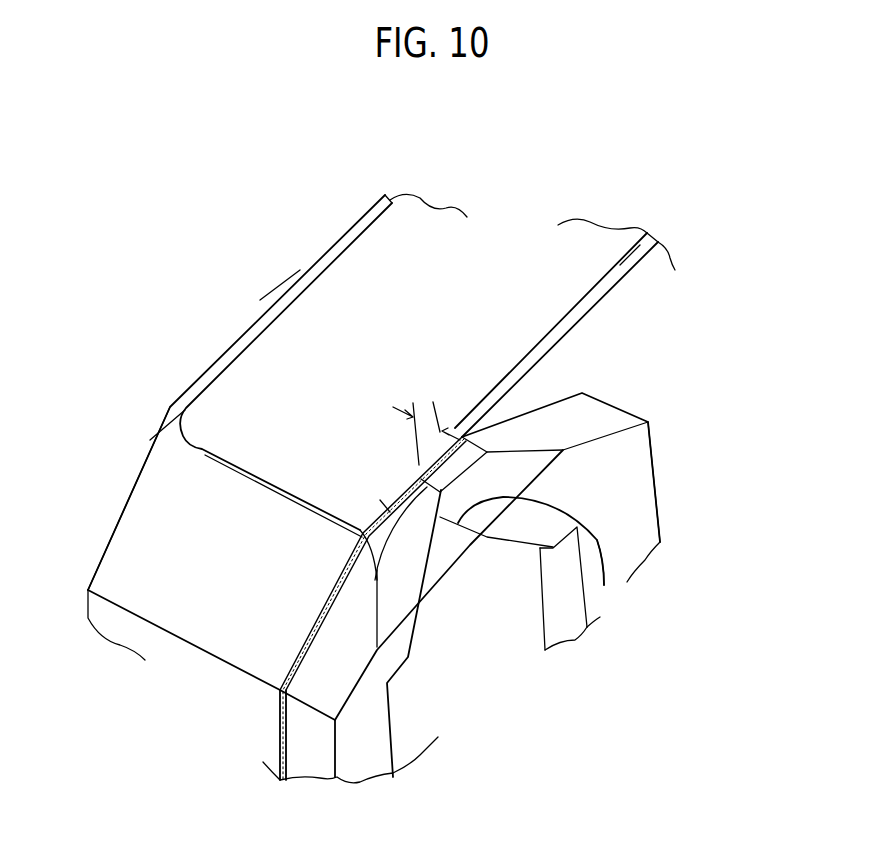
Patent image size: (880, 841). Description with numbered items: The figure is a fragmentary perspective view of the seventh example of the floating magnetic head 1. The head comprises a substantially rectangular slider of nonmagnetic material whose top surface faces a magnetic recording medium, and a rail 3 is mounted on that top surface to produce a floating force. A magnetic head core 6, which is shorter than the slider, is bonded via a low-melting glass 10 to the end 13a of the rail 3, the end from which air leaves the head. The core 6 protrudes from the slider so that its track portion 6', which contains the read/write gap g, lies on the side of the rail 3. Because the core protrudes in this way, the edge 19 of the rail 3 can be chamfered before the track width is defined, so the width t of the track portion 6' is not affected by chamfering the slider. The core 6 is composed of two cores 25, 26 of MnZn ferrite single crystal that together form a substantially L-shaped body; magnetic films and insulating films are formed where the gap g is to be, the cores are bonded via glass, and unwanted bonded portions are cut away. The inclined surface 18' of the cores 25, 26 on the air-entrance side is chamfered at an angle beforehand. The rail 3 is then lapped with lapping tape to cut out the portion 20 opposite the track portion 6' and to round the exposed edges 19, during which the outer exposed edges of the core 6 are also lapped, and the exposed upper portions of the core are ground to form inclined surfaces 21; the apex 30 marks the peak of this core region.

The floating magnetic head 1 is at (685, 180).
The rail 3 is at (432, 232).
The magnetic head core 6 is at (656, 564).
The track portion 6' is at (470, 533).
The low-melting glass 10 is at (300, 650).
The end of the rail 13a is at (148, 565).
The inclined surface 18' is at (521, 531).
The edge 19 is at (278, 313).
The portion of the rail 20 is at (405, 493).
The inclined surface 21 is at (490, 508).
The core 25 is at (297, 737).
The core 26 is at (633, 475).
The apex 30 is at (604, 585).
The read/write gap g is at (389, 512).
The width of the track portion t is at (426, 419).